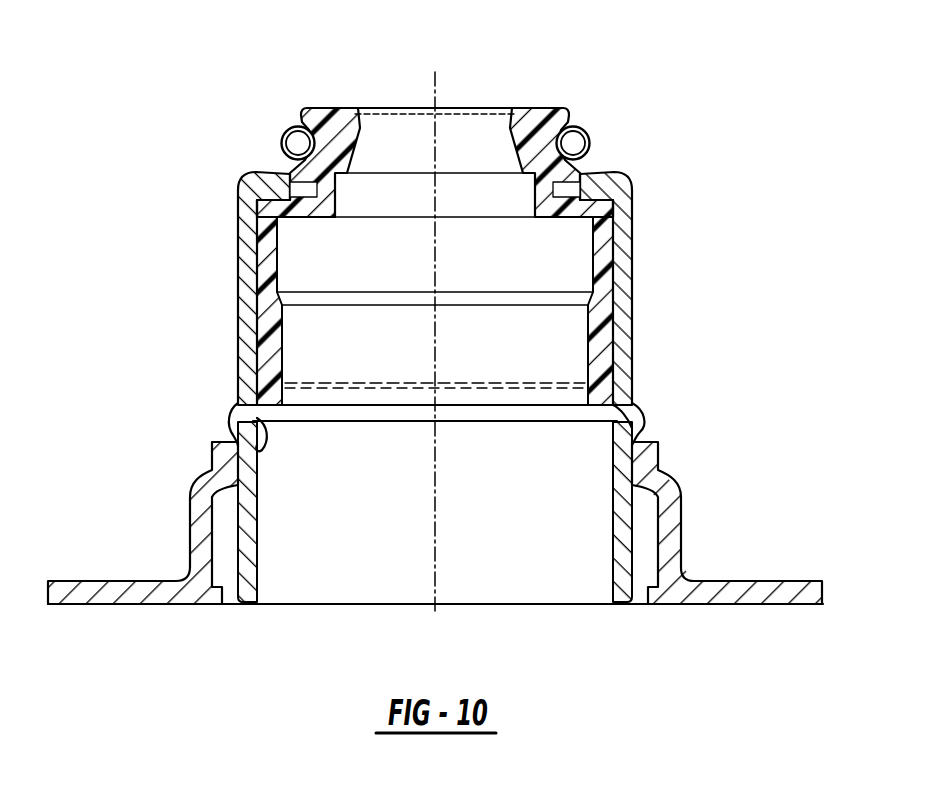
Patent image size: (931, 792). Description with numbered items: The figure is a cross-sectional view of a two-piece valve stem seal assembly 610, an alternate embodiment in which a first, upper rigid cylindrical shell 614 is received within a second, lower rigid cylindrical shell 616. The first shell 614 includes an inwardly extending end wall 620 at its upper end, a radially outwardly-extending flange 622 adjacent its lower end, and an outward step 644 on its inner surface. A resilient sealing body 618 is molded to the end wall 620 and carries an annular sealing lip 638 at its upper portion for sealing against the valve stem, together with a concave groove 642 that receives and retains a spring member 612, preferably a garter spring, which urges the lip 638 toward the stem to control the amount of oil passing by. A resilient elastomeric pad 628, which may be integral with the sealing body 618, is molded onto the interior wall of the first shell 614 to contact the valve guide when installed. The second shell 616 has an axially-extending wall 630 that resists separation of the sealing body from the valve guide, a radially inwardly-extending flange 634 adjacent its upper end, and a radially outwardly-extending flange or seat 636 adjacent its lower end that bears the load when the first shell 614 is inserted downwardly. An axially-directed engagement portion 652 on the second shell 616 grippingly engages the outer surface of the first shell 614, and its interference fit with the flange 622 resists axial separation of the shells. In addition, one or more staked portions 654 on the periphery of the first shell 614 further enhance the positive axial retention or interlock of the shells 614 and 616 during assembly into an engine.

The valve stem seal assembly 610 is at (442, 359).
The spring member 612 is at (281, 146).
The first shell 614 is at (428, 288).
The second shell 616 is at (734, 503).
The resilient sealing body 618 is at (246, 309).
The end wall 620 is at (587, 177).
The radially outwardly-extending flange 622 is at (637, 606).
The elastomeric pad 628 is at (600, 354).
The axially-extending wall 630 is at (683, 535).
The radially inwardly-extending flange 634 is at (651, 478).
The radially outwardly-extending flange or seat 636 is at (779, 583).
The annular sealing lip 638 is at (388, 120).
The concave groove 642 is at (589, 143).
The outward step 644 is at (241, 443).
The engagement portion 652 is at (625, 465).
The staked portion 654 is at (634, 415).